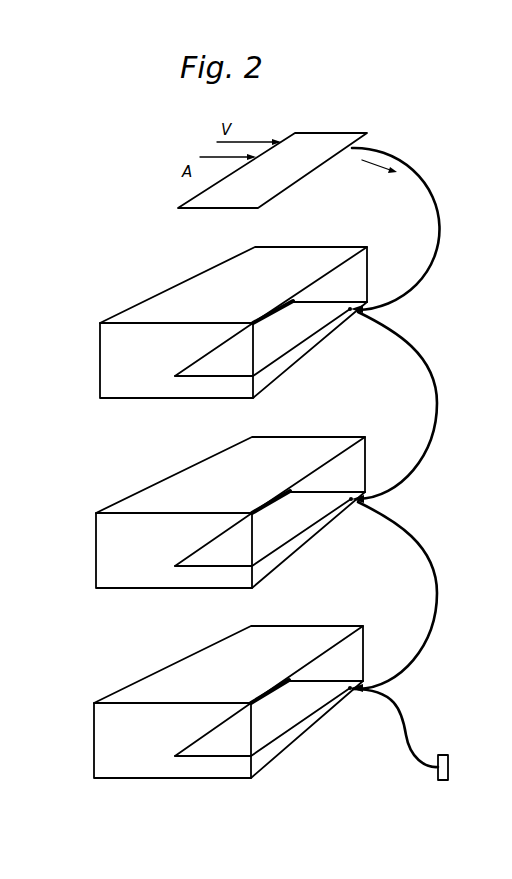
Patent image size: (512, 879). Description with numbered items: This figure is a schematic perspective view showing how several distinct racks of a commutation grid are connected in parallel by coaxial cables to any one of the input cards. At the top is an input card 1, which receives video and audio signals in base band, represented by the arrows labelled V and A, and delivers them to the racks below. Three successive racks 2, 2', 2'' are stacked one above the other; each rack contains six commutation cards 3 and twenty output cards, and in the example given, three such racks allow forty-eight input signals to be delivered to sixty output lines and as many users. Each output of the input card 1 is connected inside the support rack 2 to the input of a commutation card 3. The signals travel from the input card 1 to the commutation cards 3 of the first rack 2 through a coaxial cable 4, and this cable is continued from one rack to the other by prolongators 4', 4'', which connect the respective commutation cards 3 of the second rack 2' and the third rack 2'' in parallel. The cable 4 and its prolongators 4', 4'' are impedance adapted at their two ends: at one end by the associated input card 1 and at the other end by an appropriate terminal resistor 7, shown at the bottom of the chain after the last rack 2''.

The input card 1 is at (312, 138).
The support rack 2 is at (210, 322).
The second rack 2' is at (205, 512).
The third rack 2'' is at (202, 702).
The commutation card 3 is at (300, 331).
The coaxial cable 4 is at (396, 230).
The prolongator 4' is at (403, 407).
The prolongator 4'' is at (403, 597).
The terminal resistor 7 is at (450, 763).